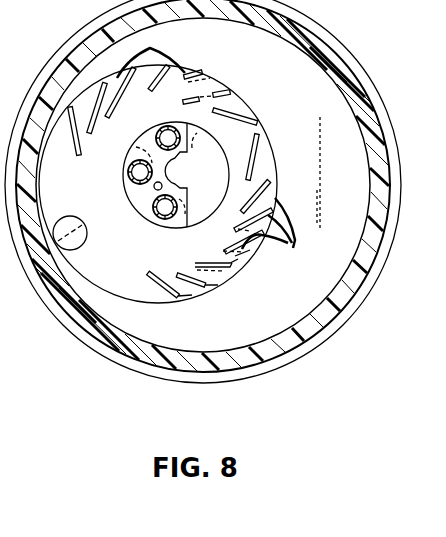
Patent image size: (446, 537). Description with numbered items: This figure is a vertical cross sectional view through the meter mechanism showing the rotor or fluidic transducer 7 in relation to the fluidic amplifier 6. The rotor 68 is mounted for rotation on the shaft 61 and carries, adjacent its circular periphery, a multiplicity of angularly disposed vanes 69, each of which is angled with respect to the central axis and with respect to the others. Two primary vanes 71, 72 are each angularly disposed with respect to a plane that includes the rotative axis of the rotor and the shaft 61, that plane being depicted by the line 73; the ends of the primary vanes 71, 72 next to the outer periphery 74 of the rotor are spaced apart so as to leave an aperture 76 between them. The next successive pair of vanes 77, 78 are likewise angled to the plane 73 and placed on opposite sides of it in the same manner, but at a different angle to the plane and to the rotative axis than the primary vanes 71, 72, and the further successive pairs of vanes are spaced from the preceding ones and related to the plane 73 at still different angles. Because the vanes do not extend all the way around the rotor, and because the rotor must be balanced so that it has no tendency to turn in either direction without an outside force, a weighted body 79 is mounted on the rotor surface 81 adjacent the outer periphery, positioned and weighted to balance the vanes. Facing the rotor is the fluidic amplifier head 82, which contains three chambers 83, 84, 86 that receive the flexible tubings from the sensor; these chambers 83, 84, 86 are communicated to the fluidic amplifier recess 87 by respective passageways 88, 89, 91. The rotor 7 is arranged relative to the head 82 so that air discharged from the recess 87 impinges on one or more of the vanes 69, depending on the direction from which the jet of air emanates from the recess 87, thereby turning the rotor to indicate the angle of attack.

The fluidic amplifier 6 is at (130, 157).
The rotor or fluidic transducer 7 is at (222, 71).
The shaft 61 is at (155, 190).
The rotor 68 is at (218, 299).
The vanes 69 is at (140, 94).
The primary vane 71 is at (238, 113).
The primary vane 72 is at (258, 158).
The plane (line) 73 is at (99, 211).
The outer periphery 74 is at (157, 306).
The aperture 76 is at (265, 130).
The vane 77 is at (228, 86).
The vane 78 is at (273, 190).
The weighted body 79 is at (86, 237).
The rotor surface 81 is at (113, 291).
The fluidic amplifier head 82 is at (180, 223).
The chamber 83 is at (128, 173).
The chamber 84 is at (166, 131).
The chamber 86 is at (162, 213).
The fluidic amplifier recess 87 is at (176, 178).
The passageway 88 is at (131, 148).
The passageway 89 is at (201, 145).
The passageway 91 is at (178, 196).